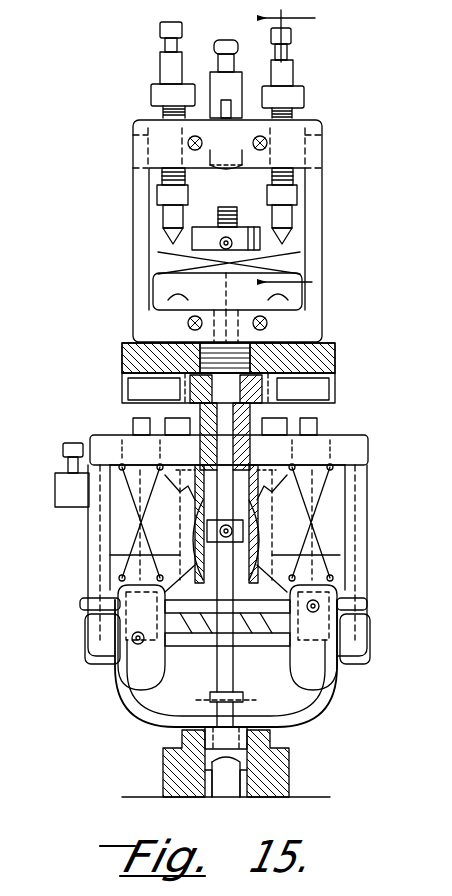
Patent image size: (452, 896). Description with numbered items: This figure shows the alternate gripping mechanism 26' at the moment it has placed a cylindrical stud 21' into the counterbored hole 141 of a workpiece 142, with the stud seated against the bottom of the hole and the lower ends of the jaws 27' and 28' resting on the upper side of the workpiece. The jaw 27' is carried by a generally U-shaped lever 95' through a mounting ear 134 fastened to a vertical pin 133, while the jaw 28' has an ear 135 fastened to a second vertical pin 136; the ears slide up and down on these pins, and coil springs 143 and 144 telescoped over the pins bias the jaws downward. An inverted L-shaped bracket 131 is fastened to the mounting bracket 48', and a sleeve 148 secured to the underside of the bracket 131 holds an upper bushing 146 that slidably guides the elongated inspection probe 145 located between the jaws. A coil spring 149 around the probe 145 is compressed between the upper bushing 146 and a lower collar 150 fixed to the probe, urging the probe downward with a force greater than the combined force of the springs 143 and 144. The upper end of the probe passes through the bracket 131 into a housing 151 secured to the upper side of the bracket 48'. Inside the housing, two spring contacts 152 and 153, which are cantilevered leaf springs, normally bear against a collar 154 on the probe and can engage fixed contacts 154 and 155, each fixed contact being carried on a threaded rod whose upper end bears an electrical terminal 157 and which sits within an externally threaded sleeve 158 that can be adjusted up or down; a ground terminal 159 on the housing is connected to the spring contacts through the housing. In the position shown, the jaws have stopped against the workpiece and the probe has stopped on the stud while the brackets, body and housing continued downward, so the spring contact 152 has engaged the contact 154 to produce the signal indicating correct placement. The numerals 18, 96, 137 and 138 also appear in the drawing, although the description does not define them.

The electrical terminal 157 is at (160, 60).
The ground terminal 159 is at (210, 78).
The externally threaded sleeve 158 is at (152, 108).
The flow direction arrow 18 is at (310, 154).
The housing 151 is at (133, 175).
The fixed contact 155 is at (160, 232).
The fixed contact 154 is at (246, 227).
The spring contact 152 is at (262, 240).
The spring contact 153 is at (158, 263).
The mounting bracket 48' is at (198, 334).
The inverted L-shaped bracket 131 is at (122, 392).
The upper bushing 146 is at (290, 384).
The sleeve 148 is at (290, 430).
The U-shaped lever 95' is at (266, 555).
The vertical pin 136 is at (137, 517).
The side fitting 96 is at (76, 555).
The coil spring 144 is at (120, 578).
The ear 135 is at (115, 618).
The coil spring 149 is at (264, 503).
The lower collar 150 is at (246, 533).
The vertical pin 133 is at (336, 556).
The coil spring 143 is at (336, 582).
The mounting ear 134 is at (340, 606).
The gripping mechanism 26' is at (174, 663).
The inspection probe 145 is at (195, 690).
The jaw 28' is at (162, 744).
The workpiece 142 is at (172, 770).
The counterbored hole 141 is at (226, 778).
The bowl inner wall 137 is at (320, 670).
The bowl outer wall 138 is at (305, 704).
The jaw 27' is at (328, 740).
The cylindrical stud 21' is at (314, 770).